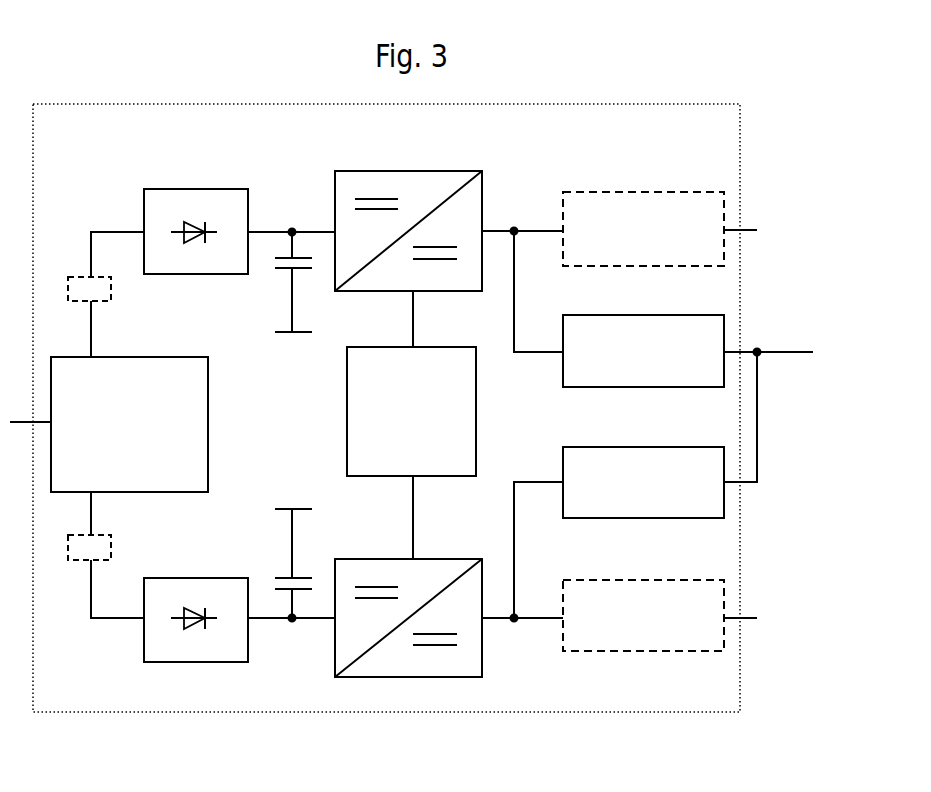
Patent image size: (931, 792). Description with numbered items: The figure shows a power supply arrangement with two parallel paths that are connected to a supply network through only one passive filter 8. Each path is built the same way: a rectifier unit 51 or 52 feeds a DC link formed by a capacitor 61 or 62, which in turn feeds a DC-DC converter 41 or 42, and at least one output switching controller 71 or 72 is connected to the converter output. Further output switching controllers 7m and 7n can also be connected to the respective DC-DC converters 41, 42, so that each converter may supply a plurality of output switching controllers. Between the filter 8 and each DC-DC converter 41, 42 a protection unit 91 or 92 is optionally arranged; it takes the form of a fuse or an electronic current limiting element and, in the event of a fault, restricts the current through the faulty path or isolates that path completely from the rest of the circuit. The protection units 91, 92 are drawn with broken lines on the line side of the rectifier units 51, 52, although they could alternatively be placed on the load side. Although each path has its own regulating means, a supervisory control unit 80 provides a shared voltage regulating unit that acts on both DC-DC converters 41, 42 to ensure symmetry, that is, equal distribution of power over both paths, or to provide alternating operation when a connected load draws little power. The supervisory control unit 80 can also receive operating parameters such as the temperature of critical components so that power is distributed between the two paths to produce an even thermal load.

The passive filter 8 is at (144, 357).
The DC-DC converter 41 is at (405, 171).
The DC-DC converter 42 is at (405, 559).
The rectifier unit 51 is at (200, 189).
The rectifier unit 52 is at (200, 578).
The capacitor 61 is at (310, 268).
The capacitor 62 is at (284, 578).
The output switching controller 71 is at (724, 330).
The output switching controller 72 is at (665, 447).
The output switching controller 7m is at (724, 212).
The output switching controller 7n is at (724, 598).
The supervisory control unit 80 is at (347, 378).
The protection unit 91 is at (75, 277).
The protection unit 92 is at (76, 561).